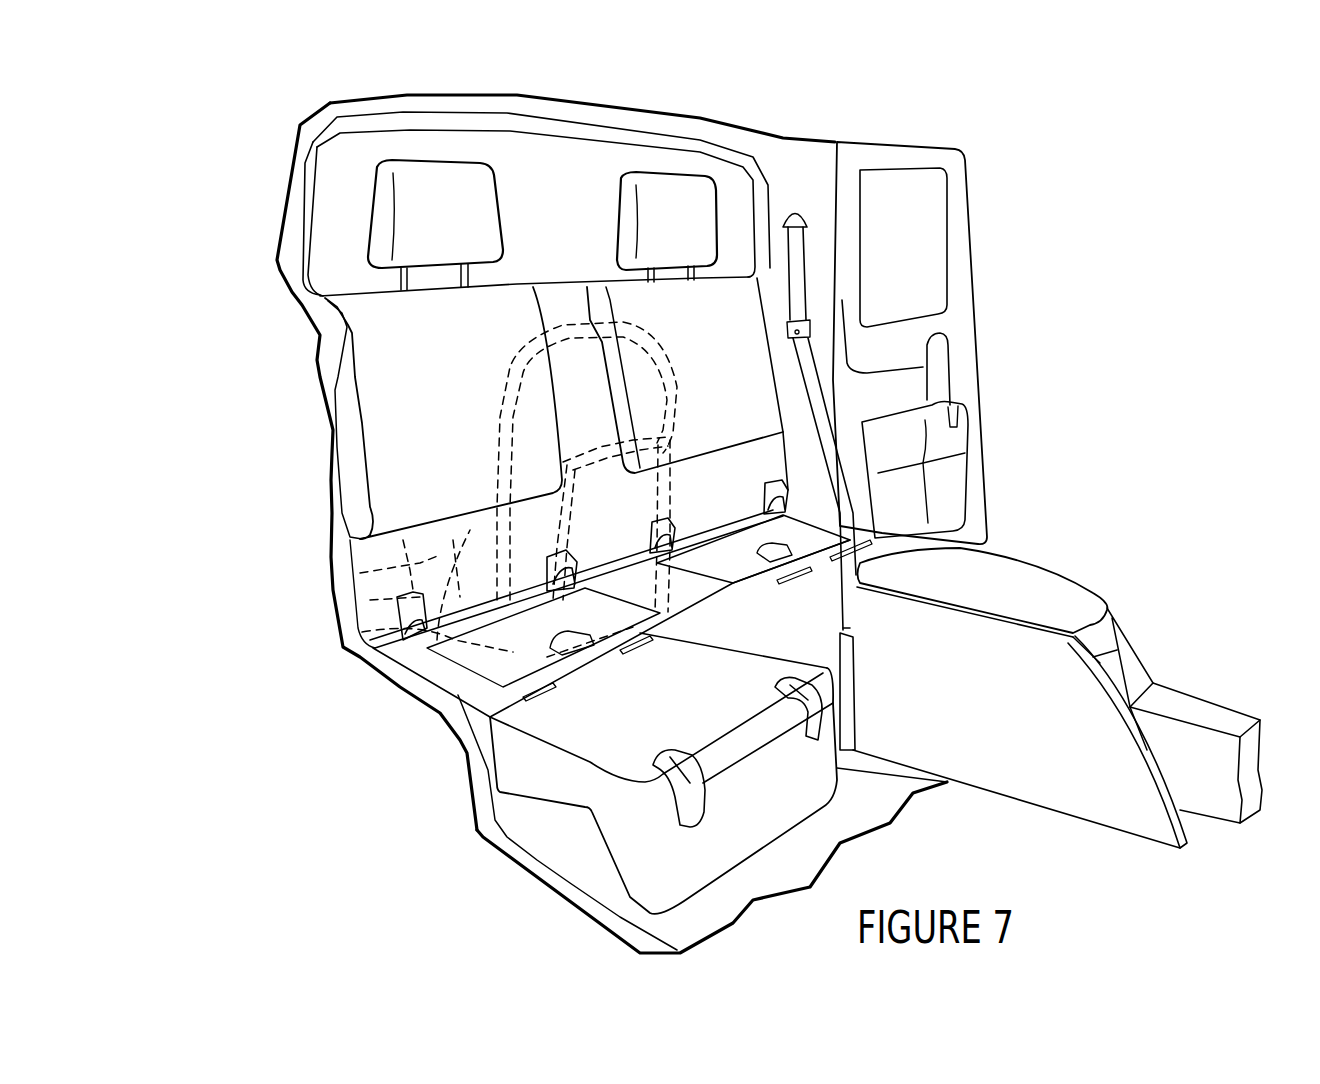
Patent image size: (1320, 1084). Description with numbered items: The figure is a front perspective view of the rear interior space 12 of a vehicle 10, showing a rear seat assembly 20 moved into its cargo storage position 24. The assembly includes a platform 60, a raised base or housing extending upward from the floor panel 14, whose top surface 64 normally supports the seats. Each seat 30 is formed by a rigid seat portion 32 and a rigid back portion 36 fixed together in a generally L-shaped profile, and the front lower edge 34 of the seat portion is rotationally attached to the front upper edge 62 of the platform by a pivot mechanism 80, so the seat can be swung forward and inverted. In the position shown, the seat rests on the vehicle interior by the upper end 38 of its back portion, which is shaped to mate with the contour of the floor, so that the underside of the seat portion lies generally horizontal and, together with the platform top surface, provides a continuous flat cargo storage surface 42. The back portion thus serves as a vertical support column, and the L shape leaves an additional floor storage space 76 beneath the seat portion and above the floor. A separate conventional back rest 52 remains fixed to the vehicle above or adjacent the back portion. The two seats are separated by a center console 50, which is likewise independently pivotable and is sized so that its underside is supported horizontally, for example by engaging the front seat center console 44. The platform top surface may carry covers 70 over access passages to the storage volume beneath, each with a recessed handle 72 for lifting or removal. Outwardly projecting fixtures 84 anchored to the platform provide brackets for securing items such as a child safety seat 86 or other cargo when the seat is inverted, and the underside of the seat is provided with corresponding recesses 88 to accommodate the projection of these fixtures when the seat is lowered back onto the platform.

The vehicle 10 is at (986, 141).
The rear interior space 12 is at (1003, 187).
The floor panel 14 is at (753, 902).
The rear seat assembly 20 is at (289, 661).
The cargo storage position 24 is at (318, 712).
The seat 30 is at (447, 892).
The seat portion 32 is at (477, 813).
The front lower edge 34 is at (593, 667).
The back portion 36 is at (640, 867).
The upper end 38 is at (773, 840).
The cargo storage surface 42 is at (632, 737).
The front seat center console 44 is at (1000, 767).
The center console 50 is at (783, 643).
The back rest 52 is at (383, 410).
The platform 60 is at (477, 770).
The front upper edge 62 is at (460, 700).
The top surface 64 is at (690, 597).
The cover 70 is at (700, 566).
The recessed handle 72 is at (780, 550).
The floor storage space 76 is at (580, 859).
The pivot mechanism 80 is at (800, 580).
The fixture 84 is at (672, 531).
The child safety seat 86 is at (360, 575).
The recess 88 is at (687, 803).